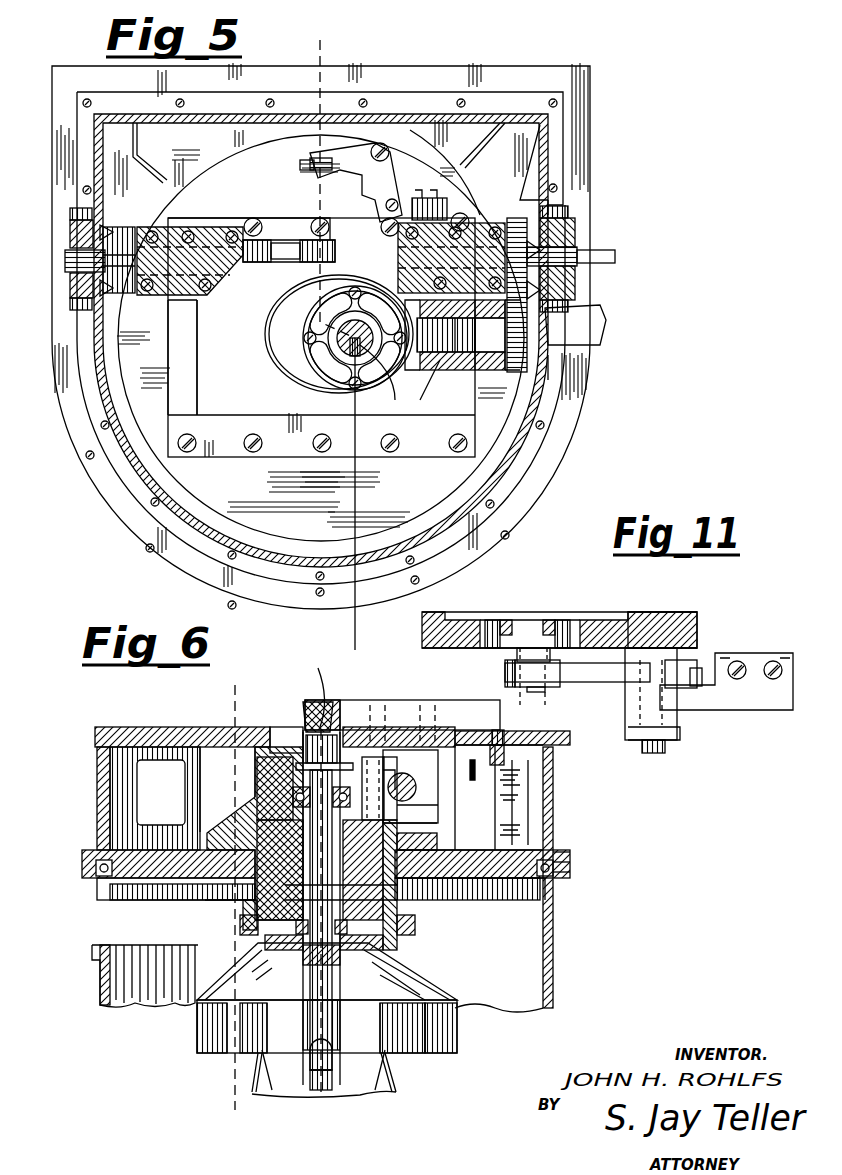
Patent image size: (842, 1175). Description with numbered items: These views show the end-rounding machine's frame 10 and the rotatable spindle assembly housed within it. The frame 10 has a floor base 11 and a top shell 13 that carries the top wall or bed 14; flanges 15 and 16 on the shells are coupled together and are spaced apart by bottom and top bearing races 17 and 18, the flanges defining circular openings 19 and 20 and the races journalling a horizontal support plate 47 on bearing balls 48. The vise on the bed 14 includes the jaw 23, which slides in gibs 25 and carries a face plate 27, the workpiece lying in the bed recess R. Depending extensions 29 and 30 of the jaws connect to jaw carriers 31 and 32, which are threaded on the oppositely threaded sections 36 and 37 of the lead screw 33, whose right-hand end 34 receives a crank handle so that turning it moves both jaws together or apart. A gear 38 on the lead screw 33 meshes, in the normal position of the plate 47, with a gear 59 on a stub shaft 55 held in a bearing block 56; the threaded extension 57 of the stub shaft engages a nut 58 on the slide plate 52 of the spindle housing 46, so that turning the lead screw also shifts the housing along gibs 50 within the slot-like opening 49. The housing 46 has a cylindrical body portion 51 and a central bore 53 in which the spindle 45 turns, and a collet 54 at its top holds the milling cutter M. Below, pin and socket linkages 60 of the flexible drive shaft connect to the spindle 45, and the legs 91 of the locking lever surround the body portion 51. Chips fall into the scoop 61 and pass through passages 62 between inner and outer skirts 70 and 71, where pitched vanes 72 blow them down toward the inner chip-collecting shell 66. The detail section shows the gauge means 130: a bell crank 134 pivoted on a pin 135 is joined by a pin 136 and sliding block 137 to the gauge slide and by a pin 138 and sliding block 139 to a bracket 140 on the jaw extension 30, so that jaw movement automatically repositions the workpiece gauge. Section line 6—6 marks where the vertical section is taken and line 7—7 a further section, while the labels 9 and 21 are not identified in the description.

In FIG. 5, the section line 6— 6 is at (288, 42).
In FIG. 6, the section line 7- 7 is at (270, 692).
In FIG. 6, the hub cap 9 is at (305, 713).
In FIG. 5, the frame 10 is at (594, 172).
In FIG. 5, the floor base 11 is at (512, 505).
In FIG. 5, the top shell 13 is at (103, 405).
In FIG. 11, the top wall 14 is at (435, 612).
In FIG. 6, the flange 15 is at (140, 900).
In FIG. 5, the flange 16 is at (95, 152).
In FIG. 6, the flange 16 is at (572, 852).
In FIG. 6, the bottom bearing race 17 is at (572, 875).
In FIG. 6, the top bearing race 18 is at (572, 865).
In FIG. 6, the circular opening 19 is at (525, 880).
In FIG. 5, the circular opening 20 is at (440, 160).
In FIG. 6, the circular opening 20 is at (553, 840).
In FIG. 6, the lower casing 21 is at (100, 935).
In FIG. 6, the jaw 23 is at (398, 700).
In FIG. 6, the gibs 25 is at (325, 700).
In FIG. 6, the face plate 27 is at (355, 700).
In FIG. 5, the depending extension 29 is at (157, 300).
In FIG. 6, the depending extension 29 is at (438, 758).
In FIG. 5, the depending extension 30 is at (451, 261).
In FIG. 5, the jaw carrier 31 is at (222, 300).
In FIG. 6, the jaw carrier 31 is at (425, 803).
In FIG. 5, the jaw carrier 32 is at (395, 227).
In FIG. 5, the lead screw 33 is at (298, 247).
In FIG. 6, the lead screw 33 is at (416, 787).
In FIG. 5, the right-hand end 34 is at (600, 252).
In FIG. 5, the threaded section 36 is at (262, 268).
In FIG. 5, the threaded section 37 is at (375, 256).
In FIG. 5, the gear 38 is at (548, 232).
In FIG. 6, the spindle 45 is at (322, 883).
In FIG. 5, the spindle housing 46 is at (268, 377).
In FIG. 6, the spindle housing 46 is at (345, 903).
In FIG. 5, the support plate 47 is at (321, 355).
In FIG. 6, the support plate 47 is at (495, 880).
In FIG. 6, the bearing balls 48 is at (88, 850).
In FIG. 6, the slot-like opening 49 is at (410, 895).
In FIG. 5, the gibs 50 is at (265, 218).
In FIG. 6, the gibs 50 is at (205, 820).
In FIG. 5, the main body portion 51 is at (410, 368).
In FIG. 6, the main body portion 51 is at (240, 920).
In FIG. 5, the slide portion 52 is at (200, 378).
In FIG. 6, the slide portion 52 is at (253, 830).
In FIG. 6, the central vertical bore 53 is at (230, 905).
In FIG. 5, the collet 54 is at (345, 345).
In FIG. 6, the collet 54 is at (315, 730).
In FIG. 5, the stub shaft 55 is at (480, 365).
In FIG. 5, the bearing block 56 is at (478, 372).
In FIG. 5, the threaded extension 57 is at (445, 365).
In FIG. 5, the threaded block 58 is at (420, 400).
In FIG. 5, the gear 59 is at (570, 310).
In FIG. 6, the pin and socket linkages 60 is at (303, 1085).
In FIG. 5, the scoop 61 is at (262, 335).
In FIG. 5, the vertical passages 62 is at (350, 298).
In FIG. 6, the vertical passages 62 is at (385, 948).
In FIG. 6, the inner sheet metal shell 66 is at (396, 1092).
In FIG. 6, the inner sheet metal skirt 70 is at (415, 1050).
In FIG. 6, the outer sheet metal skirt 71 is at (460, 1045).
In FIG. 6, the vanes 72 is at (425, 968).
In FIG. 6, the legs 91 is at (400, 928).
In FIG. 11, the gauge means 130 is at (547, 613).
In FIG. 5, the bell crank 134 is at (392, 172).
In FIG. 11, the bell crank 134 is at (596, 680).
In FIG. 5, the pin 135 is at (385, 146).
In FIG. 11, the pin 135 is at (680, 722).
In FIG. 5, the pin 136 is at (318, 157).
In FIG. 11, the pin 136 is at (540, 690).
In FIG. 5, the sliding block 137 is at (298, 165).
In FIG. 11, the sliding block 137 is at (560, 657).
In FIG. 5, the pin 138 is at (410, 205).
In FIG. 11, the pin 138 is at (690, 660).
In FIG. 5, the sliding block 139 is at (385, 204).
In FIG. 11, the sliding block 139 is at (700, 670).
In FIG. 5, the bracket 140 is at (440, 170).
In FIG. 11, the bracket 140 is at (762, 705).
In FIG. 5, the milling cutter M is at (381, 381).
In FIG. 6, the milling cutter M is at (308, 689).
In FIG. 11, the recess R is at (618, 612).